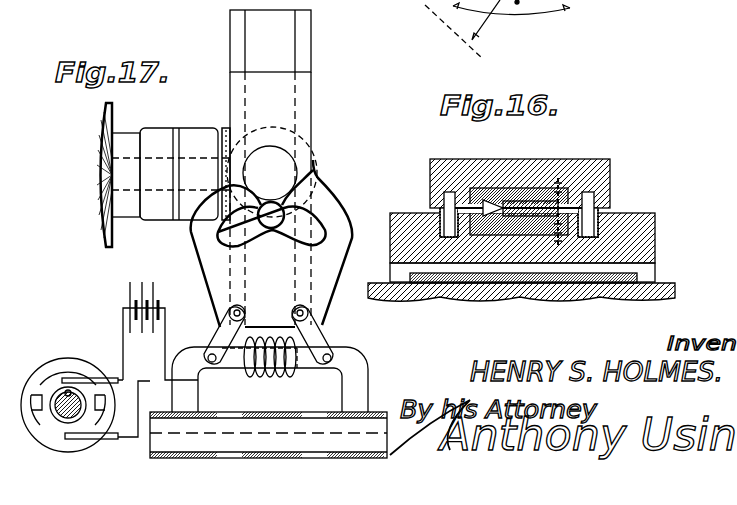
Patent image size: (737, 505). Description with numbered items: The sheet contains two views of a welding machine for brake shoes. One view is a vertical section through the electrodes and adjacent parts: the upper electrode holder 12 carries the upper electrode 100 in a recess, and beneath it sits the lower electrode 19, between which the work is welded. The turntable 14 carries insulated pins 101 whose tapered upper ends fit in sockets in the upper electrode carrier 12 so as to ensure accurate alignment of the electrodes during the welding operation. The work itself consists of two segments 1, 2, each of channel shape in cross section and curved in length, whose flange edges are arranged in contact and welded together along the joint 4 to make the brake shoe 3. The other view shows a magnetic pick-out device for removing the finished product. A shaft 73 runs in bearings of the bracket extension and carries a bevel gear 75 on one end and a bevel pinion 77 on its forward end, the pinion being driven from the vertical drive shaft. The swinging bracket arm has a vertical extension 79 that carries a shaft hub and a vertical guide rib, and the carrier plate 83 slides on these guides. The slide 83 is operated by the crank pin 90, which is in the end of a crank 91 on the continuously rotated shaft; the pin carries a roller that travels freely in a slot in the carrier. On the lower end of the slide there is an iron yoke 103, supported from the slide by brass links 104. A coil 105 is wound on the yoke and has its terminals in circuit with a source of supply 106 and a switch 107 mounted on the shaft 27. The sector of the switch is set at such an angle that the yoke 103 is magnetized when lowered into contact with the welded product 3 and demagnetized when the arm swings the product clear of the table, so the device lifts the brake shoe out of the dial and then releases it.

In FIG. 16, the segment 1 is at (495, 206).
In FIG. 16, the segment 2 is at (493, 217).
In FIG. 16, the upper electrode holder 12 is at (430, 168).
In FIG. 16, the turntable 14 is at (400, 214).
In FIG. 16, the lower electrode 19 is at (542, 232).
In FIG. 16, the upper electrode 100 is at (517, 190).
In FIG. 16, the insulated pins 101 is at (608, 197).
In FIG. 17, the brake shoe 3 is at (363, 410).
In FIG. 17, the joint 4 is at (372, 415).
In FIG. 17, the shaft 27 is at (66, 390).
In FIG. 17, the shaft 73 is at (127, 160).
In FIG. 17, the bevel gear 75 is at (230, 150).
In FIG. 17, the bevel pinion 77 is at (110, 110).
In FIG. 17, the vertical extension 79 is at (306, 52).
In FIG. 17, the carrier plate 83 is at (343, 238).
In FIG. 17, the crank pin 90 is at (273, 204).
In FIG. 17, the crank 91 is at (296, 209).
In FIG. 17, the iron yoke 103 is at (345, 361).
In FIG. 17, the brass links 104 is at (318, 334).
In FIG. 17, the coil 105 is at (257, 375).
In FIG. 17, the source of supply 106 is at (131, 300).
In FIG. 17, the switch 107 is at (47, 422).